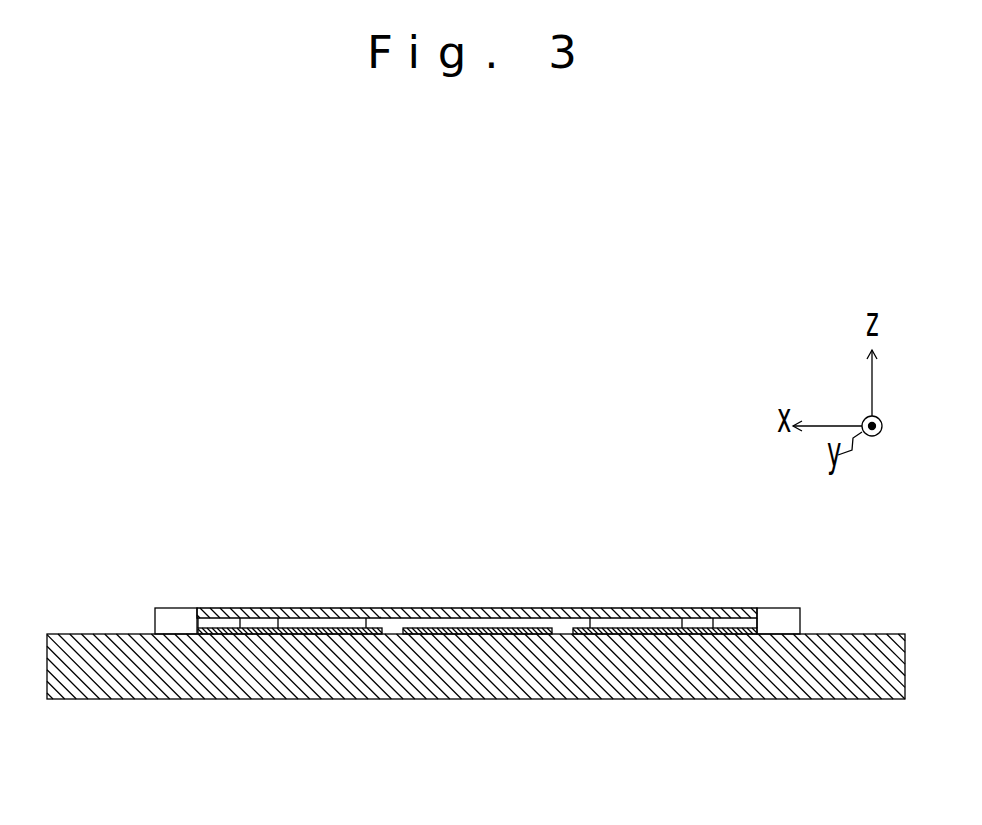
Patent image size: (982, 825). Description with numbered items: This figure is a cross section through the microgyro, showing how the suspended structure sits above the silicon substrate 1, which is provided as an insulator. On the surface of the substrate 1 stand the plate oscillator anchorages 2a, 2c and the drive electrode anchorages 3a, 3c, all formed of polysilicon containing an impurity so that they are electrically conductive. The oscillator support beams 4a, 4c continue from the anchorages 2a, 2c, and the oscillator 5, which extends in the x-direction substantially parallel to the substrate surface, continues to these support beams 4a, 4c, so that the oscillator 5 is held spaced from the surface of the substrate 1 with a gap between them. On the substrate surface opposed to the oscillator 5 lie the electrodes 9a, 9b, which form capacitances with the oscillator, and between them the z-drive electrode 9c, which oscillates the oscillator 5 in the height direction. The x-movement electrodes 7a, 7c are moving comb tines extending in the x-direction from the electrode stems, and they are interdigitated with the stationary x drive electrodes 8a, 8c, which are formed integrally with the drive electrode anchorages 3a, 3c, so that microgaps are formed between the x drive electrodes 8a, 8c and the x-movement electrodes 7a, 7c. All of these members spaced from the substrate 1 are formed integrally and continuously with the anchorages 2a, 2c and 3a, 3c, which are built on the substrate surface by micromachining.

The silicon substrate 1 is at (818, 699).
The plate oscillator anchorage 2a is at (168, 608).
The plate oscillator anchorage 2c is at (795, 608).
The drive electrode anchorage 3a is at (333, 623).
The drive electrode anchorage 3c is at (660, 623).
The oscillator support beam 4a is at (207, 608).
The oscillator support beam 4c is at (753, 608).
The oscillator 5 is at (540, 608).
The x-movement electrode 7a is at (444, 496).
The x drive electrode 8a is at (414, 600).
The x-movement electrode 7c is at (625, 496).
The x drive electrode 8c is at (591, 600).
The electrode 9a is at (292, 628).
The electrode 9b is at (617, 629).
The z-drive electrode 9c is at (467, 628).